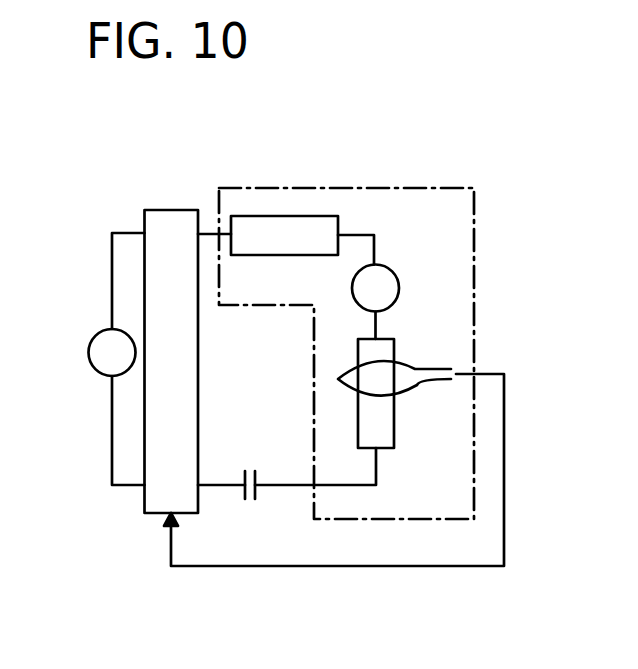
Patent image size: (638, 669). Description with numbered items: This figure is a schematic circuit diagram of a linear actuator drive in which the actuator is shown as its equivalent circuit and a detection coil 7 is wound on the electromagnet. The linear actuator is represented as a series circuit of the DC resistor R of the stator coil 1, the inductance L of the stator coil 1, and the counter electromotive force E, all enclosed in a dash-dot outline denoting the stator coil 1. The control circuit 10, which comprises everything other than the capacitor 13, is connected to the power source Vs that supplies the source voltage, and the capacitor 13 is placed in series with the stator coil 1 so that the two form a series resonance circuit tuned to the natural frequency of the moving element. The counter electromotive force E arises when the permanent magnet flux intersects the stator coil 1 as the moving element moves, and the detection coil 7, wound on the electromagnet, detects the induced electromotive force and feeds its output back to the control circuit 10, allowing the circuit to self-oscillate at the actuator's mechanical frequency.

The control circuit 10 is at (153, 211).
The power source Vs is at (89, 371).
The stator coil 1 is at (385, 178).
The DC resistor R is at (296, 215).
The counter electromotive force E is at (380, 278).
The inductance L is at (381, 346).
The detection coil 7 is at (395, 387).
The capacitor 13 is at (243, 468).